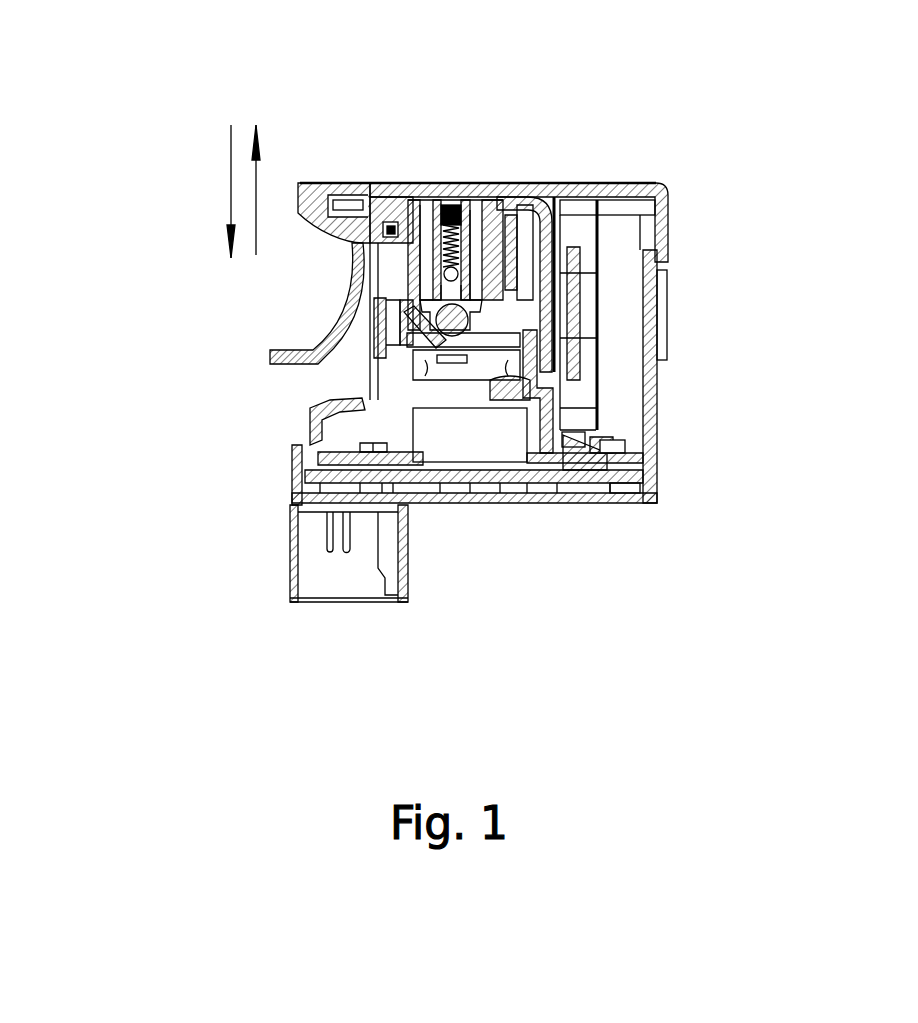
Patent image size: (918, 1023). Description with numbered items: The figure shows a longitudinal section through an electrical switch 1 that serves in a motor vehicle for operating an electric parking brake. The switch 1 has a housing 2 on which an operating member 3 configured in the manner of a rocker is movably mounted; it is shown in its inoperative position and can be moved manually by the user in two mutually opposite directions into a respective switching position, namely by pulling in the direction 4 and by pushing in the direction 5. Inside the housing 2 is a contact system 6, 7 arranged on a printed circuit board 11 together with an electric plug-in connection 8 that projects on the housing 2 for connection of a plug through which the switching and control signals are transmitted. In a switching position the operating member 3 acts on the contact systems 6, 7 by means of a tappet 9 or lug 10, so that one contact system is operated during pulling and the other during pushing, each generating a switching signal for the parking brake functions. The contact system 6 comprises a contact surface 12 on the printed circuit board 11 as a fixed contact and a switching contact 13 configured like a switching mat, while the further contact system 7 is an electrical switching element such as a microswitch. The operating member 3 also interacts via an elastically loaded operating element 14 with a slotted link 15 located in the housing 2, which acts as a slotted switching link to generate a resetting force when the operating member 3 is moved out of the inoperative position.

The electrical switch 1 is at (505, 103).
The housing 2 is at (651, 390).
The operating member 3 is at (395, 185).
The pulling direction 4 is at (258, 188).
The pushing direction 5 is at (230, 193).
The contact system 6 is at (640, 446).
The contact system 7 is at (467, 443).
The electric plug-in connection 8 is at (333, 568).
The tappet 9 is at (580, 377).
The lug 10 is at (567, 327).
The printed circuit board 11 is at (527, 480).
The contact surface 12 is at (577, 462).
The switching contact 13 is at (627, 502).
The operating element 14 is at (423, 258).
The slotted link 15 is at (435, 333).